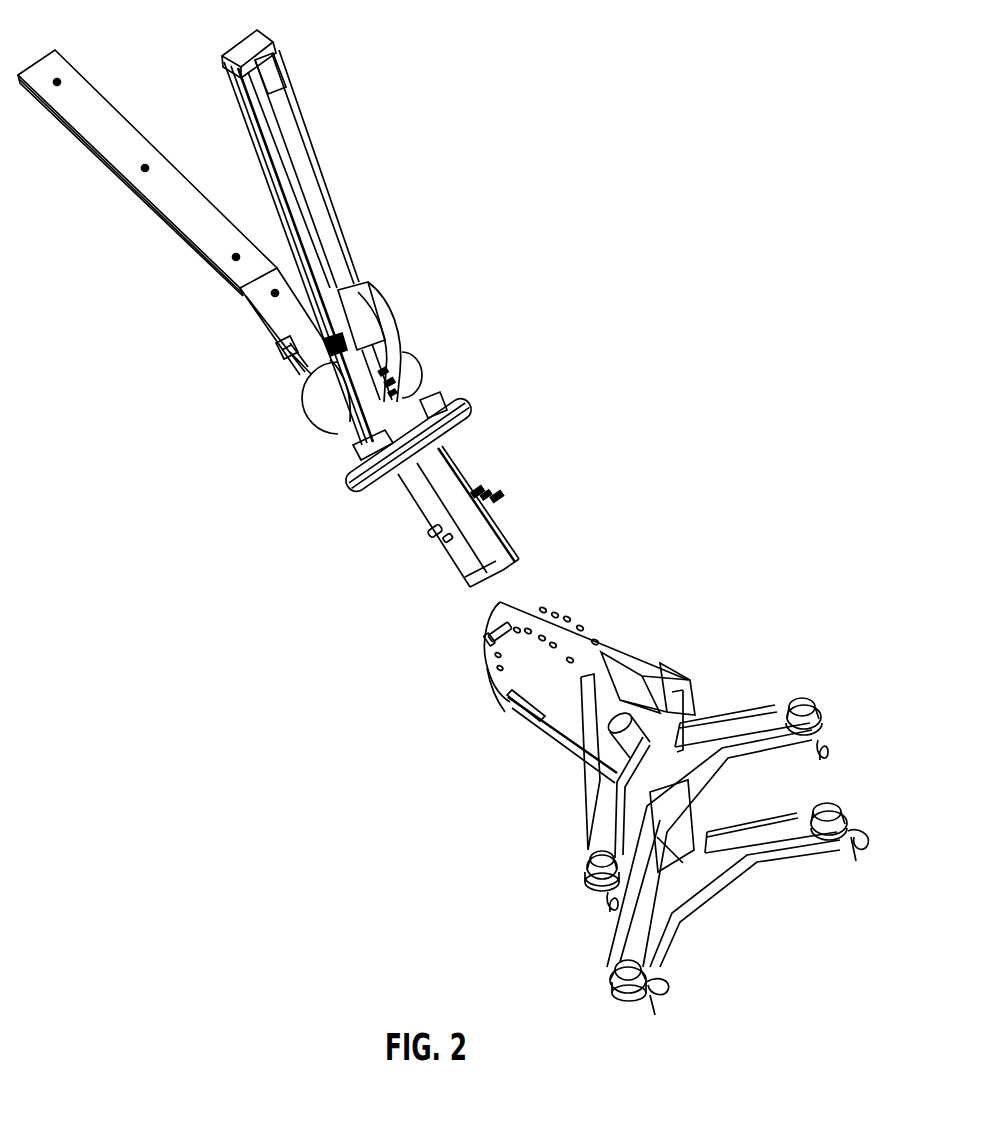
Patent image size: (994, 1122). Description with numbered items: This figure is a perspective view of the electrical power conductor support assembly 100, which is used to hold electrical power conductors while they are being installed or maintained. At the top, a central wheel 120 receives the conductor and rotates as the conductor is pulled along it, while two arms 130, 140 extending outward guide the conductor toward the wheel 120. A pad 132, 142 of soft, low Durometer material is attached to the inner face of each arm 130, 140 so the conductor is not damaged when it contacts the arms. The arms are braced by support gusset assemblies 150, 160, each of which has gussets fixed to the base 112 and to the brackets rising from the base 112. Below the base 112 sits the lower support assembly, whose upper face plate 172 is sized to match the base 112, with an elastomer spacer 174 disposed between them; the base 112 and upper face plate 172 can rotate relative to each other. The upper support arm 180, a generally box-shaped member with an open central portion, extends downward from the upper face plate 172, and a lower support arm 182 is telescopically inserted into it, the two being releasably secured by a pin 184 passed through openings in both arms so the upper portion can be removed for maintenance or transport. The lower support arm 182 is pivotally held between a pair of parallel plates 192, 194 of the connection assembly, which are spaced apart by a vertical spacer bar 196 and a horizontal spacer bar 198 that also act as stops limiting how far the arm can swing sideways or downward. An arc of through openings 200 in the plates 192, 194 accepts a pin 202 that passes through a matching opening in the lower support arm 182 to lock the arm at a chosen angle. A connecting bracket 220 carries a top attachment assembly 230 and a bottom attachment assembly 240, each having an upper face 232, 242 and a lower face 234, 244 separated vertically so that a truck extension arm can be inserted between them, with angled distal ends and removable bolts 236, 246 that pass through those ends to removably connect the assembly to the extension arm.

The electrical power conductor support assembly 100 is at (558, 196).
The base 112 is at (440, 405).
The central wheel 120 is at (338, 410).
The arm 130 is at (128, 192).
The pad 132 is at (108, 106).
The arm 140 is at (315, 168).
The pad 142 is at (246, 46).
The support gusset assembly 150 is at (275, 352).
The support gusset assembly 160 is at (327, 347).
The upper face plate 172 is at (475, 414).
The elastomer spacer 174 is at (467, 400).
The upper support arm 180 is at (498, 530).
The lower support arm 182 is at (500, 567).
The pin 184 is at (492, 493).
The plate 192 is at (510, 690).
The plate 194 is at (590, 607).
The vertical spacer bar 196 is at (600, 645).
The horizontal spacer bar 198 is at (528, 723).
The through openings 200 is at (567, 615).
The pin 202 is at (490, 640).
The connecting bracket 220 is at (680, 692).
The top attachment assembly 230 is at (763, 720).
The upper face 232 is at (603, 823).
The lower face 234 is at (593, 880).
The removable bolt 236 is at (803, 709).
The bottom attachment assembly 240 is at (790, 828).
The upper face 242 is at (622, 966).
The lower face 244 is at (620, 1000).
The removable bolt 246 is at (850, 838).